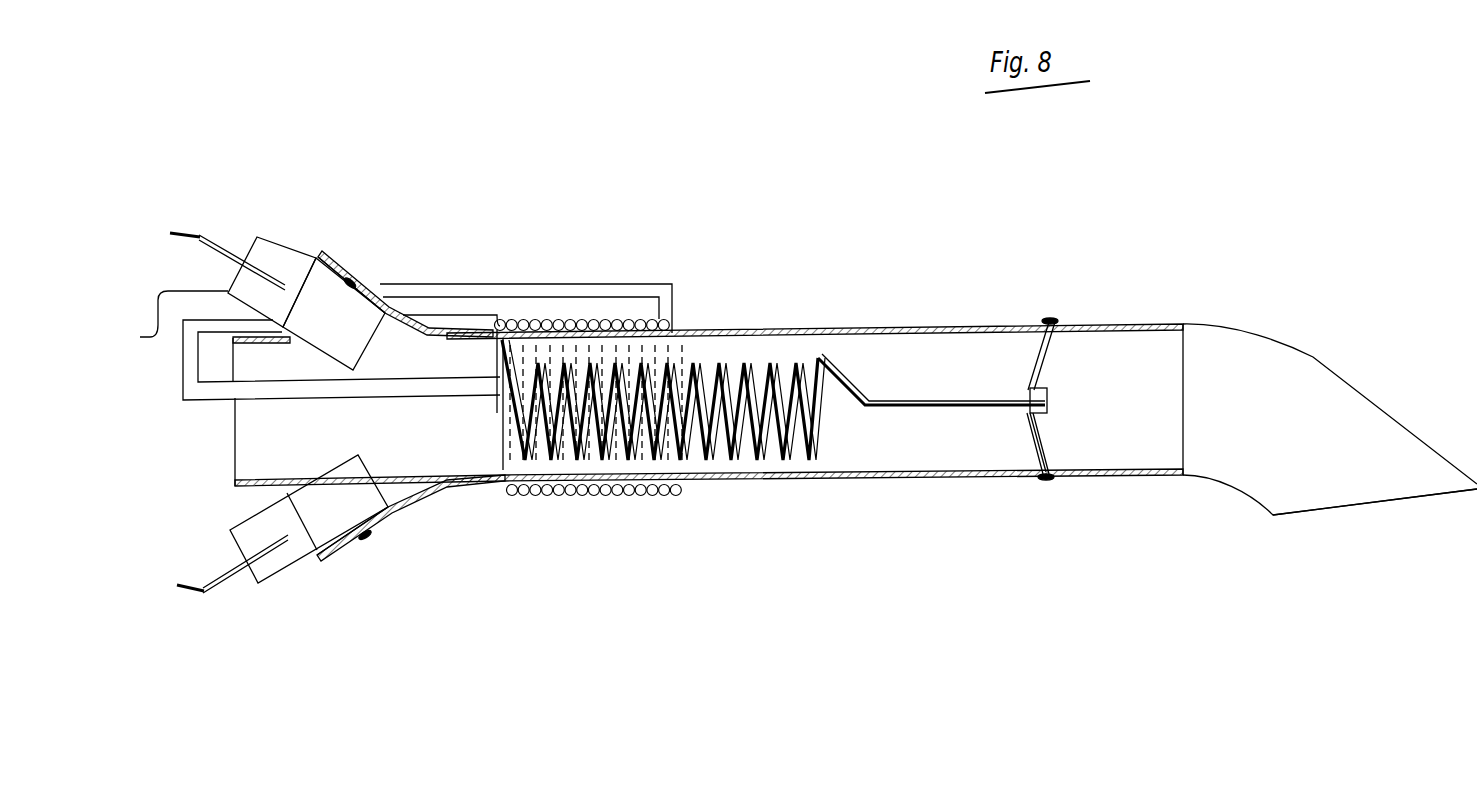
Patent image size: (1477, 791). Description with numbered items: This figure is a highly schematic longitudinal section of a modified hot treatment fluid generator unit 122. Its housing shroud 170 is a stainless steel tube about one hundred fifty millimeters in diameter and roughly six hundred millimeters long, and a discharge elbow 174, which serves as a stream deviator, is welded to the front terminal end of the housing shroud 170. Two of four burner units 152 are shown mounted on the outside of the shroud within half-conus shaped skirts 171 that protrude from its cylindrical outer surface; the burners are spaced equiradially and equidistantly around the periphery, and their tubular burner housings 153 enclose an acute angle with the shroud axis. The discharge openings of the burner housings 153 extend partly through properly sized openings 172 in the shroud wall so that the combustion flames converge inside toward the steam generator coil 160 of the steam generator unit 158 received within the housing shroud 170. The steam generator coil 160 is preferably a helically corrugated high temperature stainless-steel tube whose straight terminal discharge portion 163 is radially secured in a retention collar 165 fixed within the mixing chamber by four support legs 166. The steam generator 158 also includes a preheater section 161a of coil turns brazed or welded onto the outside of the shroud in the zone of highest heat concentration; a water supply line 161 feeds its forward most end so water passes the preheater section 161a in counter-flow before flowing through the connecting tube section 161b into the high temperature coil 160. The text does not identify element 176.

The treatment fluid generator unit 122 is at (828, 287).
The burner unit 152 is at (291, 243).
The tubular burner housing 153 is at (272, 240).
The steam generator unit 158 is at (735, 465).
The steam generator coil 160 is at (690, 440).
The water supply line 161 is at (583, 283).
The preheater section 161a is at (627, 320).
The connecting tube section 161b is at (268, 400).
The terminal discharge portion 163 is at (943, 397).
The retention collar 165 is at (1040, 413).
The support leg 166 is at (1038, 450).
The housing shroud 170 is at (807, 481).
The half-conus shaped skirt 171 is at (380, 283).
The opening 172 is at (422, 313).
The discharge elbow 174 is at (1313, 357).
The nozzle edge 176 is at (1363, 505).